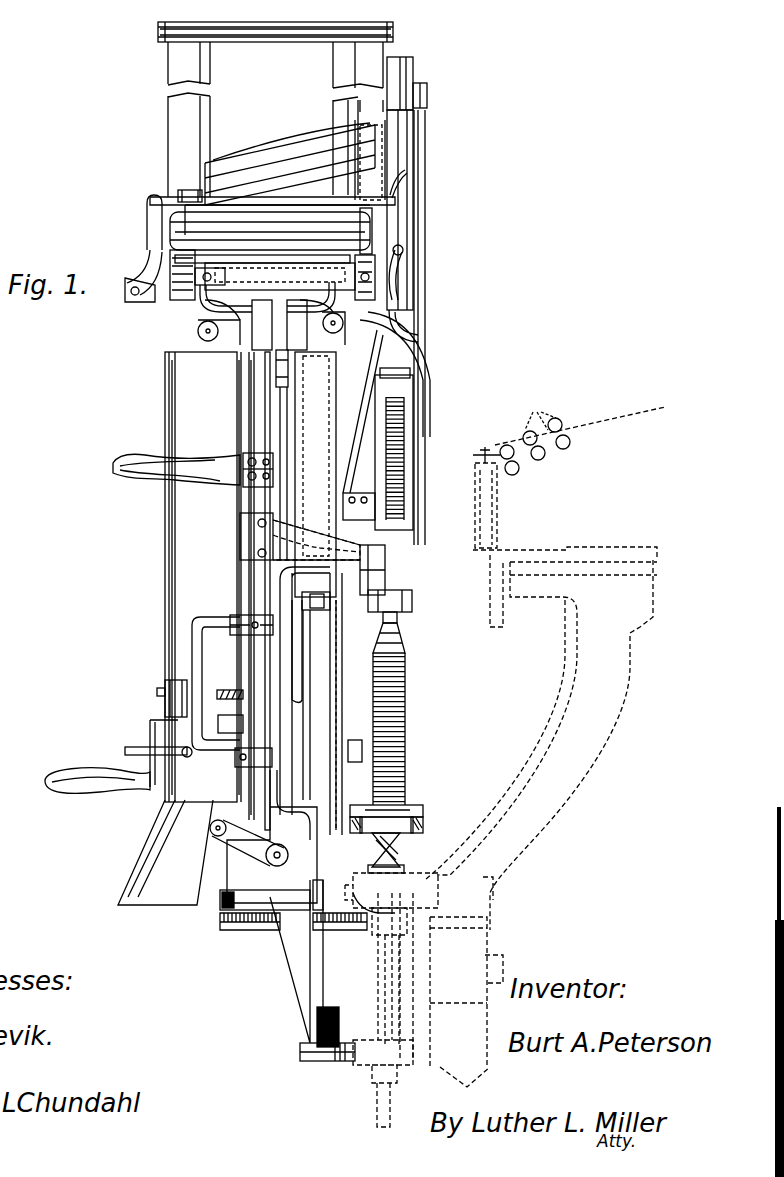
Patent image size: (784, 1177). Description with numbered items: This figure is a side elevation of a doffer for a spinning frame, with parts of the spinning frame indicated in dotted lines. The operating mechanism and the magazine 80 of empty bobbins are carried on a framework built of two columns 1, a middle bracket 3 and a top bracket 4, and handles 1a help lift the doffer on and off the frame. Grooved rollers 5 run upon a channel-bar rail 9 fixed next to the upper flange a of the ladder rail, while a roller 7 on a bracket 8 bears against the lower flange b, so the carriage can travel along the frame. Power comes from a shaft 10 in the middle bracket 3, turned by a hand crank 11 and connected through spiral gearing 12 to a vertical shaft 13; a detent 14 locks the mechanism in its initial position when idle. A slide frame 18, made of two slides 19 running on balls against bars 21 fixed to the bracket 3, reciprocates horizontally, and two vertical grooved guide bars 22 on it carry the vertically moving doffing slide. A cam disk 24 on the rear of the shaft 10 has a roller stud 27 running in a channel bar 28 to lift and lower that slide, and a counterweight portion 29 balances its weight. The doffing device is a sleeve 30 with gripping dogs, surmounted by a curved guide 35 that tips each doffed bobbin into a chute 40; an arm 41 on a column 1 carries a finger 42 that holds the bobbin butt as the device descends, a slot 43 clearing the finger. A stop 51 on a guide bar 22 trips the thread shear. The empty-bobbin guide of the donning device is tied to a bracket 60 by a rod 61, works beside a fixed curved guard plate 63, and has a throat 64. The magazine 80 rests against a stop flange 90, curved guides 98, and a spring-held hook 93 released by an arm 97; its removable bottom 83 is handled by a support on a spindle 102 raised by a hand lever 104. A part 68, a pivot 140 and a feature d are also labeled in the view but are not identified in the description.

The columns 1 is at (257, 407).
The handles 1a is at (130, 466).
The middle bracket 3 is at (205, 632).
The top bracket 4 is at (205, 300).
The grooved rollers 5 is at (318, 884).
The roller 7 is at (312, 1055).
The bracket 8 is at (302, 970).
The channel-bar rail 9 is at (395, 906).
The shaft 10 is at (190, 690).
The hand crank 11 is at (150, 722).
The spiral gearing 12 is at (222, 688).
The vertical shaft 13 is at (245, 422).
The detent 14 is at (125, 752).
The slide frame 18 is at (386, 670).
The slides 19 is at (278, 612).
The bars 21 is at (235, 620).
The vertical grooved guide bars 22 is at (388, 722).
The cam disk 24 is at (386, 646).
The roller stud 27 is at (280, 590).
The channel bar 28 is at (372, 632).
The counterweight portion 29 is at (372, 792).
The sleeve 30 is at (316, 593).
The guide 35 is at (413, 447).
The chute 40 is at (178, 503).
The arm 41 is at (302, 540).
The finger 42 is at (382, 572).
The slot 43 is at (398, 452).
The stop 51 is at (392, 756).
The bracket 60 is at (428, 103).
The rod 61 is at (420, 252).
The curved guard plate 63 is at (395, 147).
The throat 64 is at (400, 331).
The post 68 is at (403, 83).
The magazine 80 is at (178, 210).
The removable bottom 83 is at (240, 290).
The stop flange 90 is at (268, 262).
The hook 93 is at (398, 193).
The arm 97 is at (400, 289).
The curved guides 98 is at (192, 200).
The spindle 102 is at (288, 380).
The hand lever 104 is at (280, 362).
The pivot 140 is at (213, 337).
The upper flange a is at (410, 870).
The lower flange b is at (368, 1060).
The rollers d is at (580, 432).